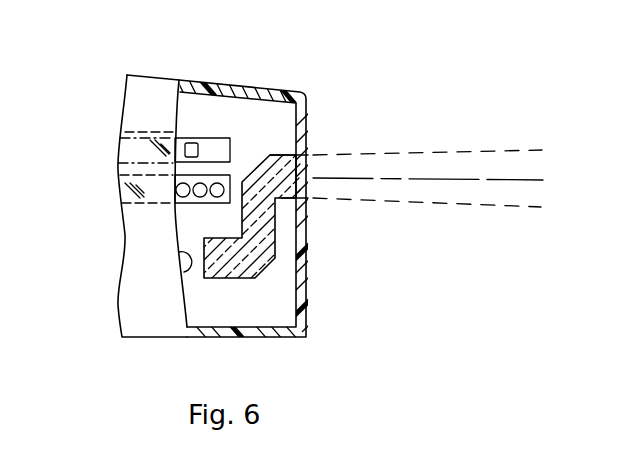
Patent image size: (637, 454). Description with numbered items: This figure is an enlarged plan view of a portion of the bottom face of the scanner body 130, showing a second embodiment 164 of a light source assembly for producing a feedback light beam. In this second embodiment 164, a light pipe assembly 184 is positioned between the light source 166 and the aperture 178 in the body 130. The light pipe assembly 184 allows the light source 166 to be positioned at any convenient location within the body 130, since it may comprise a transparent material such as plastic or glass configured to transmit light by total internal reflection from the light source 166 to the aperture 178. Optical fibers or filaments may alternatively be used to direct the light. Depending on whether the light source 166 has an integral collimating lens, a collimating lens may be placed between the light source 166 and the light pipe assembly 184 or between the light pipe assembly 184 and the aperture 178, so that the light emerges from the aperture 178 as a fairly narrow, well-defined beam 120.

The beam 120 is at (448, 148).
The body 130 is at (122, 249).
The second embodiment of a light source assembly 164 is at (304, 56).
The light source 166 is at (187, 274).
The aperture 178 is at (300, 157).
The light pipe assembly 184 is at (255, 265).